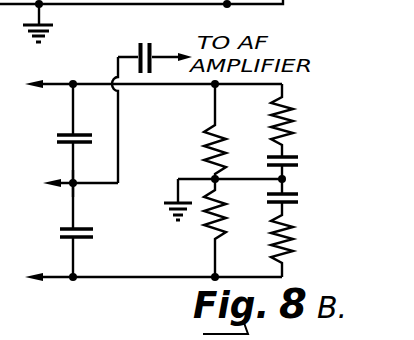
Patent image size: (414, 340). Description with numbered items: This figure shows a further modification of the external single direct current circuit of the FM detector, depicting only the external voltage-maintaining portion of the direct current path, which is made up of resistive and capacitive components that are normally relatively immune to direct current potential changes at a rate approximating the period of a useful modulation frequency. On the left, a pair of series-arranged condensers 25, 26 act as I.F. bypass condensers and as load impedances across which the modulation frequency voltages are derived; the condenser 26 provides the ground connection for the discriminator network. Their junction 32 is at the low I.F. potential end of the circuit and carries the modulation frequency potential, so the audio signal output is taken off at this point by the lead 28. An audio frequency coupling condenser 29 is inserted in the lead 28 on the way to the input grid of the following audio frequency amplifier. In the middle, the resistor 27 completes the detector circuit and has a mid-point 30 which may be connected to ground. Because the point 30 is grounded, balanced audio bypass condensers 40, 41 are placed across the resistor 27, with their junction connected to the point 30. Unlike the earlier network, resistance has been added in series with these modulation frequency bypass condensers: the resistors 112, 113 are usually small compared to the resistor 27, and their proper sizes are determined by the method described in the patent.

The condenser 25 is at (64, 134).
The condenser 26 is at (62, 239).
The resistor 27 is at (212, 130).
The lead 28 is at (117, 72).
The audio frequency coupling condenser 29 is at (160, 34).
The mid-point of resistor 30 is at (218, 178).
The junction of condensers 32 is at (76, 186).
The audio bypass condenser 40 is at (298, 165).
The audio bypass condenser 41 is at (298, 202).
The resistor 112 is at (299, 118).
The resistor 113 is at (302, 238).